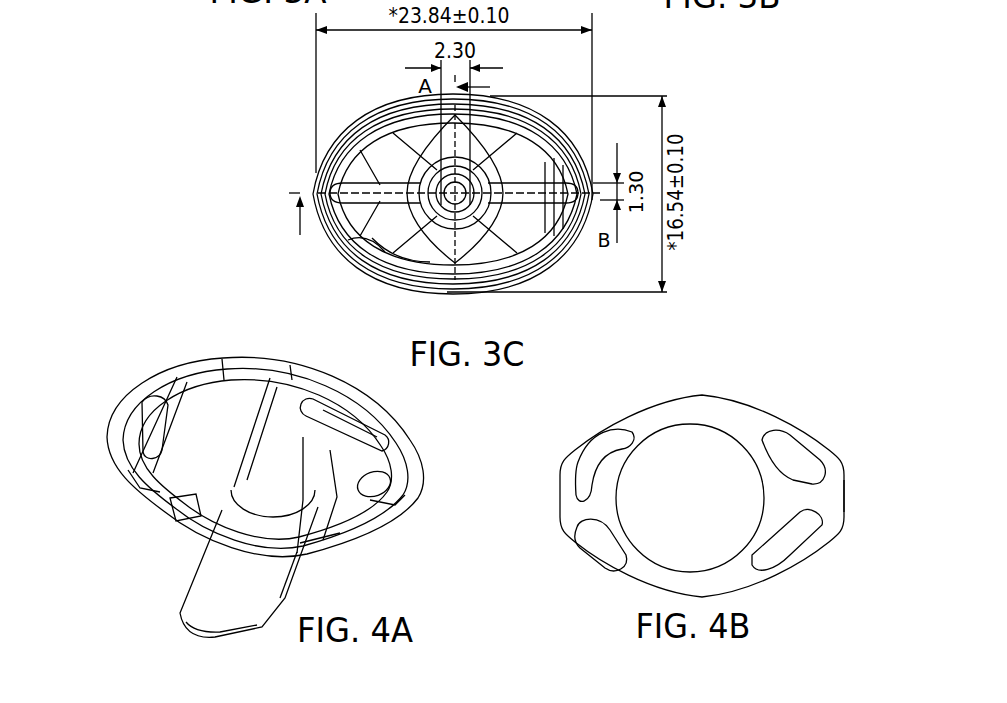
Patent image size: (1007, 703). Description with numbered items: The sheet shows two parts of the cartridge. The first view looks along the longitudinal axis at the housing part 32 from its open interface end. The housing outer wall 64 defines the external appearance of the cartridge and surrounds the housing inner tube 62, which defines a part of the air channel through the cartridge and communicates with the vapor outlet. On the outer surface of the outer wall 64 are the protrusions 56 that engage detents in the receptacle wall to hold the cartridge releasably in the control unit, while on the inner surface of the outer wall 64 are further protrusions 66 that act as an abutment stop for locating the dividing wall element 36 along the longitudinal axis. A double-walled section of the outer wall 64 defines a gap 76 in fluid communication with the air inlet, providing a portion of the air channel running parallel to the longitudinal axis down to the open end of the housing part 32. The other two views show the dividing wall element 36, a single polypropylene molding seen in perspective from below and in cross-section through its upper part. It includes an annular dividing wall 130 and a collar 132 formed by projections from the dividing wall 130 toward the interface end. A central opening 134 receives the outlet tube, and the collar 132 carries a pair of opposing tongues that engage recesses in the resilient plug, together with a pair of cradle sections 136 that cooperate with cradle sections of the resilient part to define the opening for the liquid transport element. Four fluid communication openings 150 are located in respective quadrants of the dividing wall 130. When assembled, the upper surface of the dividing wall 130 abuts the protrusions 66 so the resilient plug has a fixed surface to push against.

In FIG. 3C, the housing part 32 is at (379, 281).
In FIG. 3C, the protrusions 56 is at (398, 276).
In FIG. 3C, the housing inner tube 62 is at (421, 157).
In FIG. 3C, the housing outer wall 64 is at (342, 137).
In FIG. 3C, the protrusions 66 is at (346, 247).
In FIG. 3C, the gap 76 is at (590, 160).
In FIG. 4A, the dividing wall element 36 is at (402, 411).
In FIG. 4B, the dividing wall element 36 is at (824, 393).
In FIG. 4A, the dividing wall 130 is at (180, 373).
In FIG. 4B, the dividing wall 130 is at (837, 517).
In FIG. 4A, the collar 132 is at (330, 552).
In FIG. 4A, the central opening 134 is at (256, 493).
In FIG. 4B, the central opening 134 is at (715, 489).
In FIG. 4A, the cradle sections 136 is at (137, 477).
In FIG. 4A, the fluid communication openings 150 is at (137, 415).
In FIG. 4B, the fluid communication openings 150 is at (593, 447).